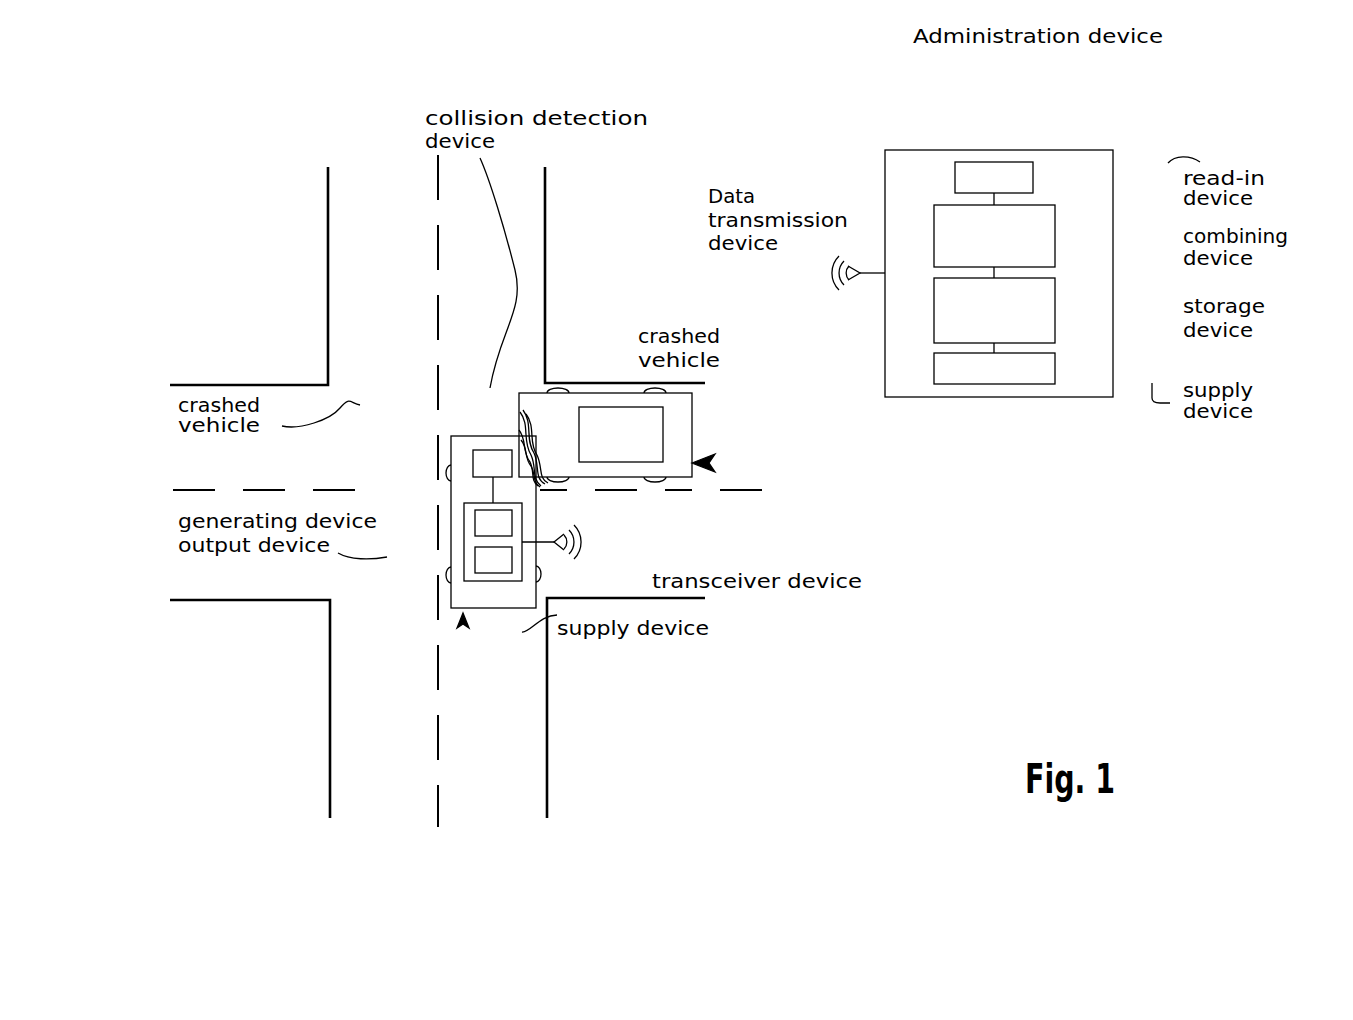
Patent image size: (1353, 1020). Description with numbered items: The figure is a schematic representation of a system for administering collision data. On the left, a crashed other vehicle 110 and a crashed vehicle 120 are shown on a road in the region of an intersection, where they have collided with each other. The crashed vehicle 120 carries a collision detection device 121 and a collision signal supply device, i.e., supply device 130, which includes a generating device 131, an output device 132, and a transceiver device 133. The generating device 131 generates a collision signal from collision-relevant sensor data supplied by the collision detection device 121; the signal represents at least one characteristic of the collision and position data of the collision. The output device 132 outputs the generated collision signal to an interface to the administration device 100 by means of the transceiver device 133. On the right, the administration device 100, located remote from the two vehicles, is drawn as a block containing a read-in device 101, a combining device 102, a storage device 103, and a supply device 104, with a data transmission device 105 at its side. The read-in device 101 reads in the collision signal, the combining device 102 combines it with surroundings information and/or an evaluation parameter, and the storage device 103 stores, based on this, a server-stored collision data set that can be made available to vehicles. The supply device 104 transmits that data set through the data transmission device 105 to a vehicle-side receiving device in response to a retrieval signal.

The administration device 100 is at (999, 227).
The read-in device 101 is at (1033, 175).
The combining device 102 is at (1055, 235).
The storage device 103 is at (1055, 305).
The supply device 104 is at (1055, 363).
The data transmission device 105 is at (866, 273).
The crashed other vehicle 110 is at (702, 405).
The crashed vehicle 120 is at (502, 513).
The collision detection device 121 is at (490, 450).
The supply device 130 is at (457, 574).
The generating device 131 is at (475, 518).
The output device 132 is at (475, 553).
The transceiver device 133 is at (553, 548).